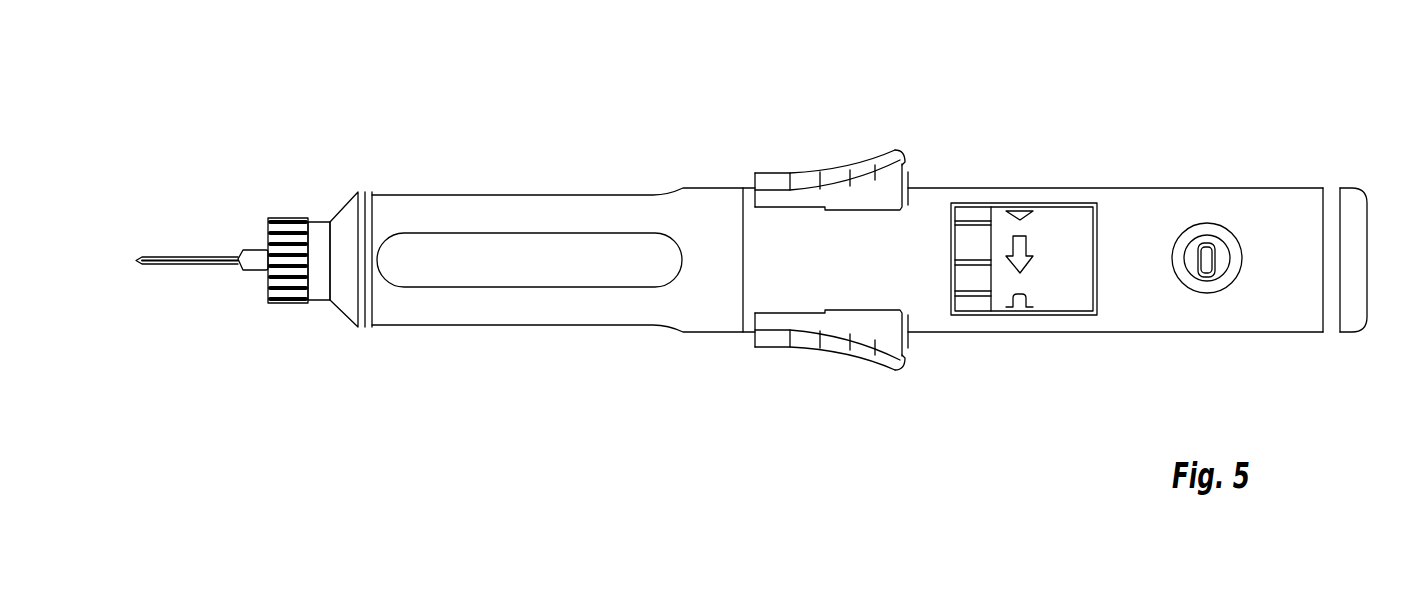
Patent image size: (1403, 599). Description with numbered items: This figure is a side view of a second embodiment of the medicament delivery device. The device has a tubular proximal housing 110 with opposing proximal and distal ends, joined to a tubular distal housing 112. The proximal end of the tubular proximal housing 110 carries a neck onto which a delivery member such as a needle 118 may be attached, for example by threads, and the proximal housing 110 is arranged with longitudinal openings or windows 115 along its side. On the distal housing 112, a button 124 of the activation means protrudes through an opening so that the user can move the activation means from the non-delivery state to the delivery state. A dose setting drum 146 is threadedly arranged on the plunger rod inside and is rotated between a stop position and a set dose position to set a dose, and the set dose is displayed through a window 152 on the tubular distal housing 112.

The tubular proximal housing 110 is at (518, 207).
The tubular distal housing 112 is at (1153, 207).
The longitudinal openings or windows 115 is at (542, 275).
The needle 118 is at (203, 262).
The button 124 is at (870, 182).
The dose setting drum 146 is at (1063, 295).
The window 152 is at (1213, 252).